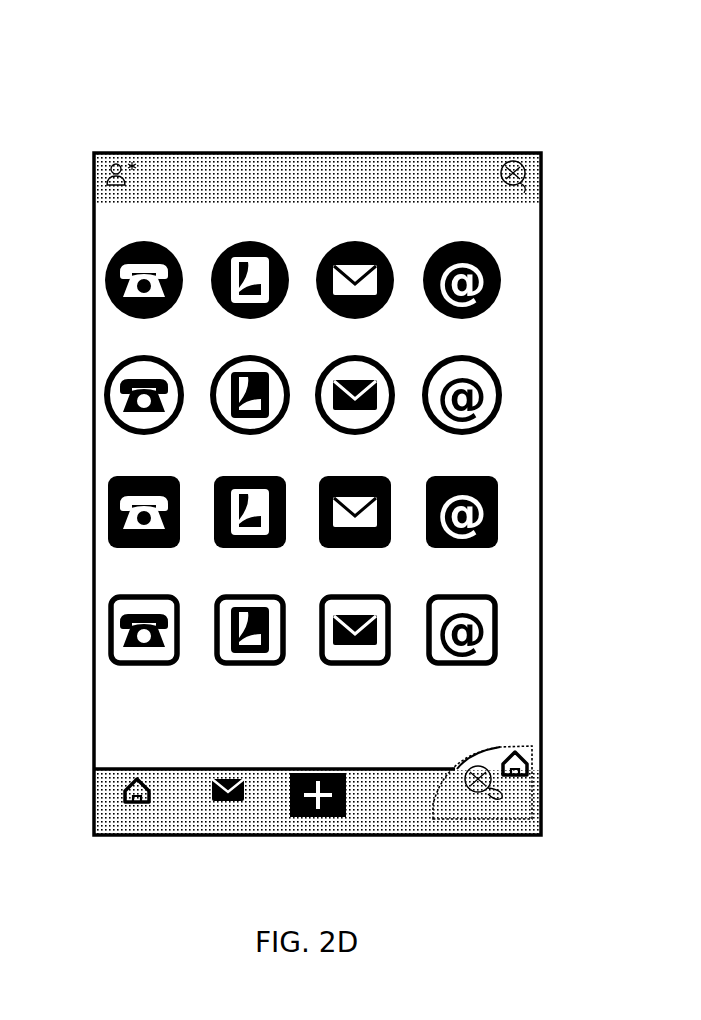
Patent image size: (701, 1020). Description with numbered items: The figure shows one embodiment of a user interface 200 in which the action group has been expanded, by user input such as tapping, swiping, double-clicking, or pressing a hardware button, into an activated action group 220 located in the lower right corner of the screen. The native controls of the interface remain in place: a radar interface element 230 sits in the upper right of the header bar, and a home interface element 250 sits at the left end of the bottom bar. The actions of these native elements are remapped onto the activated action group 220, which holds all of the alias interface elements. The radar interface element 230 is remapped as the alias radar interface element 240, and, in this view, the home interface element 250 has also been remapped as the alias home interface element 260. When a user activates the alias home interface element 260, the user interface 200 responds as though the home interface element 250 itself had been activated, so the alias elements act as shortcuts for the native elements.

The user interface 200 is at (394, 440).
The activated action group 220 is at (526, 823).
The radar interface element 230 is at (519, 185).
The alias radar interface element 240 is at (478, 792).
The home interface element 250 is at (122, 792).
The alias home interface element 260 is at (543, 769).